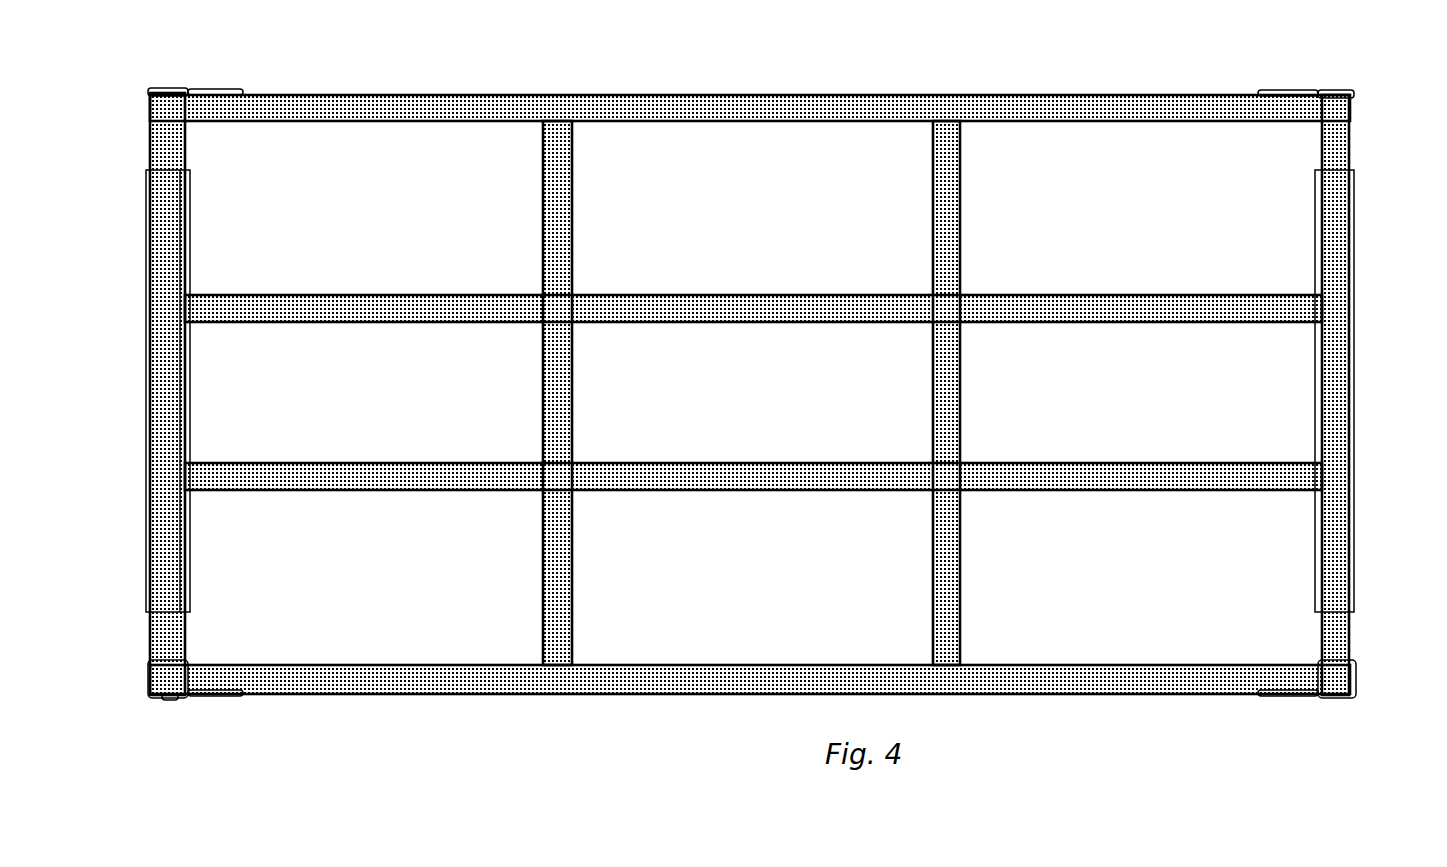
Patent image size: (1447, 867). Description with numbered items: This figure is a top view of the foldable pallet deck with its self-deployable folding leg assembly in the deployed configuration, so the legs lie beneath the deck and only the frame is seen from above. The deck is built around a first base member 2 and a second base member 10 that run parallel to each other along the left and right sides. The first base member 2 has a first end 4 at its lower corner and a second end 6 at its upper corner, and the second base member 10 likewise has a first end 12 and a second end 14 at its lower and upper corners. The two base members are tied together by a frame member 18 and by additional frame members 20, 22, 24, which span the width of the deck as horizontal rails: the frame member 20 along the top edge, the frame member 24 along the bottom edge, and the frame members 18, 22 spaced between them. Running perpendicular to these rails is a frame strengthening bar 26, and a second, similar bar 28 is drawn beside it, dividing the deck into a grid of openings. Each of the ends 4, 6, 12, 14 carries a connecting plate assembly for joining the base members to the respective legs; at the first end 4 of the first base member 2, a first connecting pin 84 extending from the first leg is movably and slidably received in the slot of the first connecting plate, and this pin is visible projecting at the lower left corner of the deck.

The first base member 2 is at (165, 373).
The first end 4 is at (150, 673).
The second end 6 is at (150, 100).
The second base member 10 is at (1335, 372).
The first end 12 is at (1338, 681).
The second end 14 is at (1338, 108).
The frame member 18 is at (768, 310).
The additional frame member 20 is at (768, 110).
The additional frame member 22 is at (765, 478).
The additional frame member 24 is at (768, 683).
The frame strengthening bar 26 is at (558, 205).
The right vertical bar 28 is at (945, 195).
The first connecting pin 84 is at (170, 700).